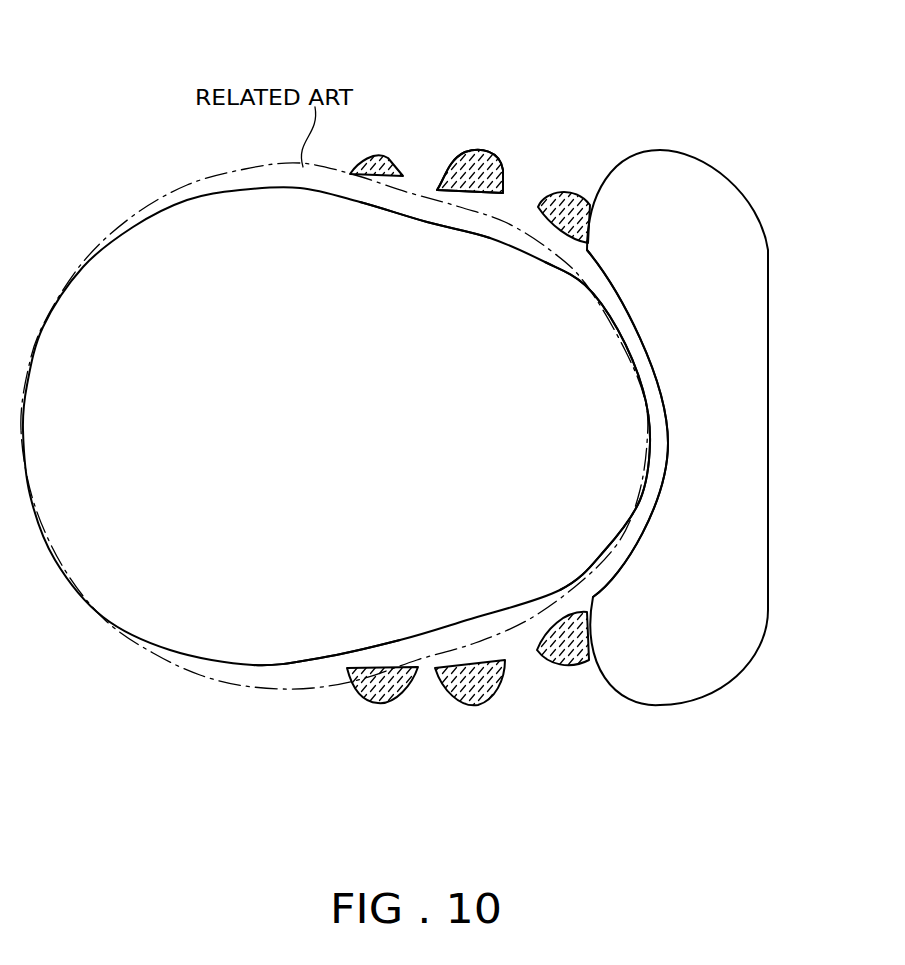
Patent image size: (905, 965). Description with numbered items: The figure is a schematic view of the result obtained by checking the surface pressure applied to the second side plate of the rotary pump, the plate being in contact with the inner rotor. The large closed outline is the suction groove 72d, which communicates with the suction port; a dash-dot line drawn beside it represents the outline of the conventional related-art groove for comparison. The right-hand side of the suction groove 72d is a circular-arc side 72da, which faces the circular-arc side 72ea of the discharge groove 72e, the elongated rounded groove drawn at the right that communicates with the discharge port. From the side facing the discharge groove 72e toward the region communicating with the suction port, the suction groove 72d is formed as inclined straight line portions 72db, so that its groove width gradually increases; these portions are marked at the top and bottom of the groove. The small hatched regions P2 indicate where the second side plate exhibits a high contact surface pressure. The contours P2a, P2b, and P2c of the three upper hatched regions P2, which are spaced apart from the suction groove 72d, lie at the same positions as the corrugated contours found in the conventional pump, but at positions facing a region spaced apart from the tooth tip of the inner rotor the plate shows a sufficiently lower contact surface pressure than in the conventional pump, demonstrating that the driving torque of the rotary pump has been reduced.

The suction groove 72d is at (187, 200).
The side of the suction groove 72da is at (650, 447).
The inclined straight line portion 72db is at (427, 222).
The discharge groove 72e is at (769, 390).
The side of the discharge groove 72ea is at (670, 443).
The hatched regions P2 is at (500, 167).
The contour P2a is at (372, 153).
The contour P2b is at (482, 152).
The contour P2c is at (578, 188).